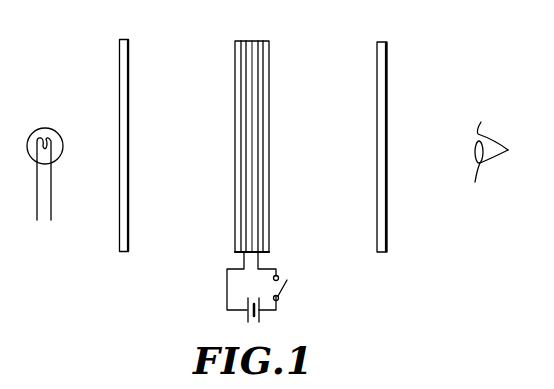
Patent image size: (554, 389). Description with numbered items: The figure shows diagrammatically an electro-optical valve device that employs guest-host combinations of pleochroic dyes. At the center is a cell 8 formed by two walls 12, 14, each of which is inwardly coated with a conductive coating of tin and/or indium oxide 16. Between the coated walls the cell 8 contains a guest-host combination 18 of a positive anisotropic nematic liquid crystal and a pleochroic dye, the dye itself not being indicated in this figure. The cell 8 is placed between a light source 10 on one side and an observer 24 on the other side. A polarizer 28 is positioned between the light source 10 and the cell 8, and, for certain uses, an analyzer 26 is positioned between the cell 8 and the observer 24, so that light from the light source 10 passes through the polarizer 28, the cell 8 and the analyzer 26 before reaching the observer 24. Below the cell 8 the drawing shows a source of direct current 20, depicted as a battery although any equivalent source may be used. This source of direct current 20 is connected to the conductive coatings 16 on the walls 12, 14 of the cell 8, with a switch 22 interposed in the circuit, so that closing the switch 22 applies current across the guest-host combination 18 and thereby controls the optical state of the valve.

The cell 8 is at (256, 130).
The light source 10 is at (42, 225).
The wall 12 is at (241, 105).
The wall 14 is at (268, 105).
The conductive coatings 16 is at (245, 62).
The guest-host combination 18 is at (252, 47).
The source of direct current 20 is at (262, 316).
The switch 22 is at (287, 280).
The observer 24 is at (492, 160).
The analyzer 26 is at (388, 248).
The polarizer 28 is at (126, 253).